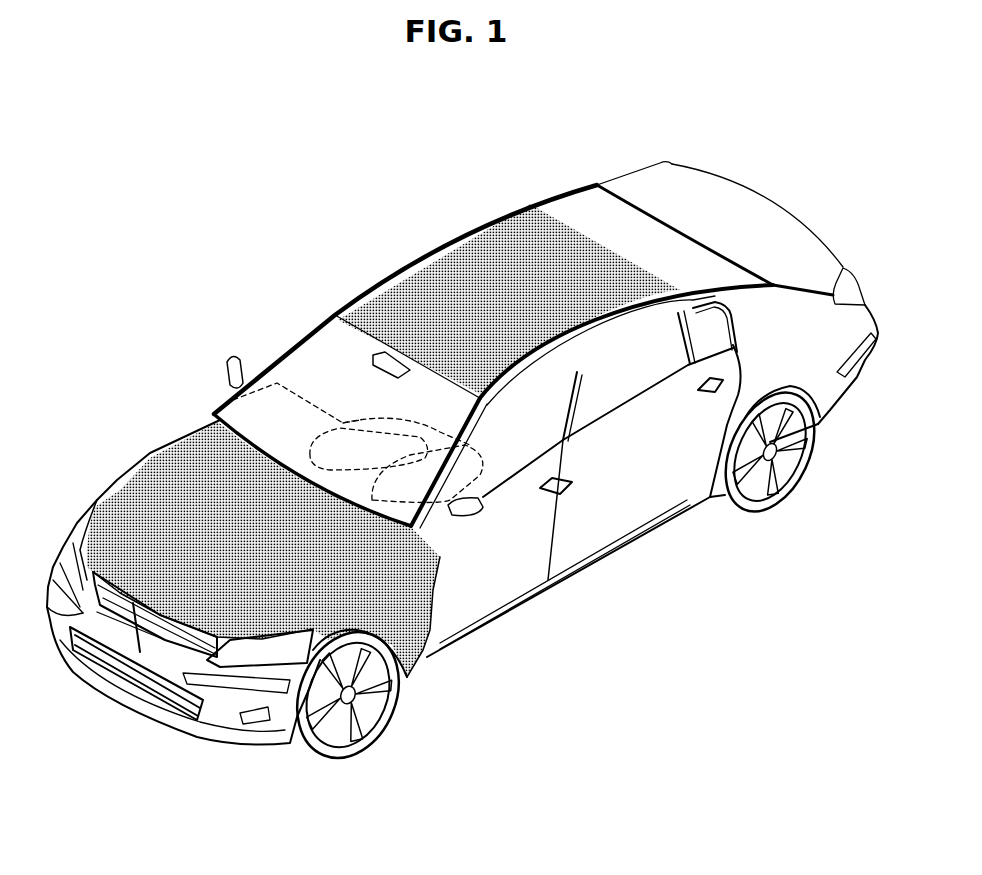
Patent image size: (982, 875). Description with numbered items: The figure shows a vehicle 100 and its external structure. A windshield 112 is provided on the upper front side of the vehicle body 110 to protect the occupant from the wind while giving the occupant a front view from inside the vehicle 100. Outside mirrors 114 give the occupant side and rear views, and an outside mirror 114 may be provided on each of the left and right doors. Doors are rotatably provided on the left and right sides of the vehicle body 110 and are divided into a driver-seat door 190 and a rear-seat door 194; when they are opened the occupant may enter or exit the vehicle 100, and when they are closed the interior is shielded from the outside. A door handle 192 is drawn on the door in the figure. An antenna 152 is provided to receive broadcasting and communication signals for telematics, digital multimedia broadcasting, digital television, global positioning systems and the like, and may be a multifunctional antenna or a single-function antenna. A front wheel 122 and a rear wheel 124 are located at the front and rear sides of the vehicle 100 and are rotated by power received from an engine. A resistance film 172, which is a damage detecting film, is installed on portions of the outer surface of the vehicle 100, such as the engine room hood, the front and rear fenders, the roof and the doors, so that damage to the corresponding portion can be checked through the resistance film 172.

The vehicle 100 is at (250, 169).
The vehicle body 110 is at (318, 300).
The windshield 112 is at (317, 350).
The outside mirror 114 is at (227, 372).
The front wheel 122 is at (377, 698).
The rear wheel 124 is at (790, 458).
The antenna 152 is at (597, 247).
The resistance film 172 is at (432, 273).
The driver-seat door 190 is at (540, 543).
The door handle 192 is at (572, 487).
The rear-seat door 194 is at (655, 467).